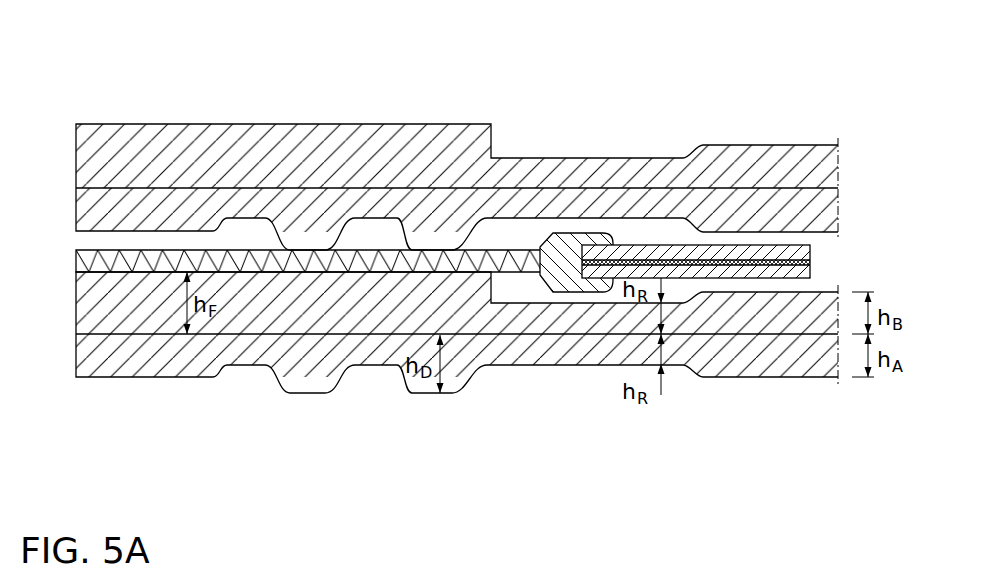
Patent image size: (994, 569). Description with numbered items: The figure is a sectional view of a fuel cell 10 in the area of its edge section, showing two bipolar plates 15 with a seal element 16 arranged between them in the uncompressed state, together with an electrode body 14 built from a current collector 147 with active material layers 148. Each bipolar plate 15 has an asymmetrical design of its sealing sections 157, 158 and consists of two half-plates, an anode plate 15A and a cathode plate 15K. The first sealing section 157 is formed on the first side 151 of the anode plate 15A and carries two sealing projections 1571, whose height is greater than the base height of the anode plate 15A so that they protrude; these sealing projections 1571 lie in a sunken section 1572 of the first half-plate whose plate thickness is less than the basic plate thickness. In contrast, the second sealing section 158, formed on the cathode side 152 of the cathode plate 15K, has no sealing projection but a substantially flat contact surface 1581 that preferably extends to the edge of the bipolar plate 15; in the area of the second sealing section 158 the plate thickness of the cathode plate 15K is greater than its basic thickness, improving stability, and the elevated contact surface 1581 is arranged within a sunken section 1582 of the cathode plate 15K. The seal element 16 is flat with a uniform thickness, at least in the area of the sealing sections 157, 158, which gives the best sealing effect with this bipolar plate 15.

The connection structure 10 is at (680, 87).
The electrode body 14 is at (896, 183).
The bipolar plate 15 is at (65, 125).
The cathode plate 15K is at (713, 313).
The anode plate 15A is at (787, 350).
The seal element 16 is at (87, 259).
The current collector 147 is at (805, 263).
The active material layer 148 is at (792, 253).
The first side 151 is at (507, 368).
The cathode side 152 is at (517, 157).
The first sealing section 157 is at (493, 455).
The second sealing section 158 is at (493, 83).
The sealing projection 1571 is at (310, 383).
The sunken section 1572 is at (572, 367).
The flat contact surface 1581 is at (367, 270).
The sunken section 1582 is at (620, 155).